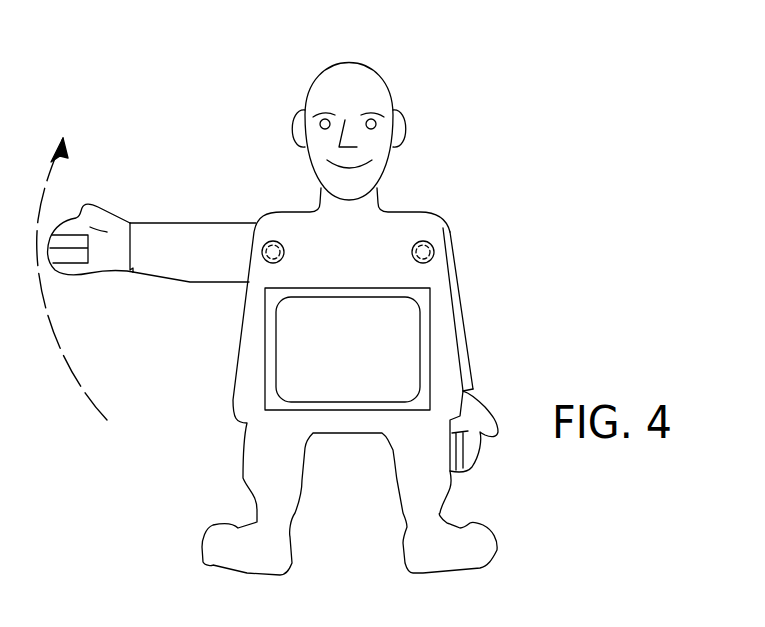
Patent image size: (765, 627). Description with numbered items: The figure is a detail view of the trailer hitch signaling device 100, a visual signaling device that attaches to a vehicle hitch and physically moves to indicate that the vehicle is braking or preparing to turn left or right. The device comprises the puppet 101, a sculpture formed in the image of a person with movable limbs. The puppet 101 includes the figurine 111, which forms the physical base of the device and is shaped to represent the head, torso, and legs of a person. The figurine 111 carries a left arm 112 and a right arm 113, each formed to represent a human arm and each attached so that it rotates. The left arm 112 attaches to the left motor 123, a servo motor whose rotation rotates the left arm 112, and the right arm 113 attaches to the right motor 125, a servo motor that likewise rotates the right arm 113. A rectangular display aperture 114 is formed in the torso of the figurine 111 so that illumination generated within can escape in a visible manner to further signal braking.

The trailer hitch signaling device 100 is at (200, 113).
The puppet 101 is at (441, 180).
The figurine 111 is at (365, 92).
The left arm 112 is at (482, 418).
The right arm 113 is at (177, 240).
The display aperture 114 is at (383, 338).
The left motor 123 is at (431, 246).
The right motor 125 is at (273, 245).